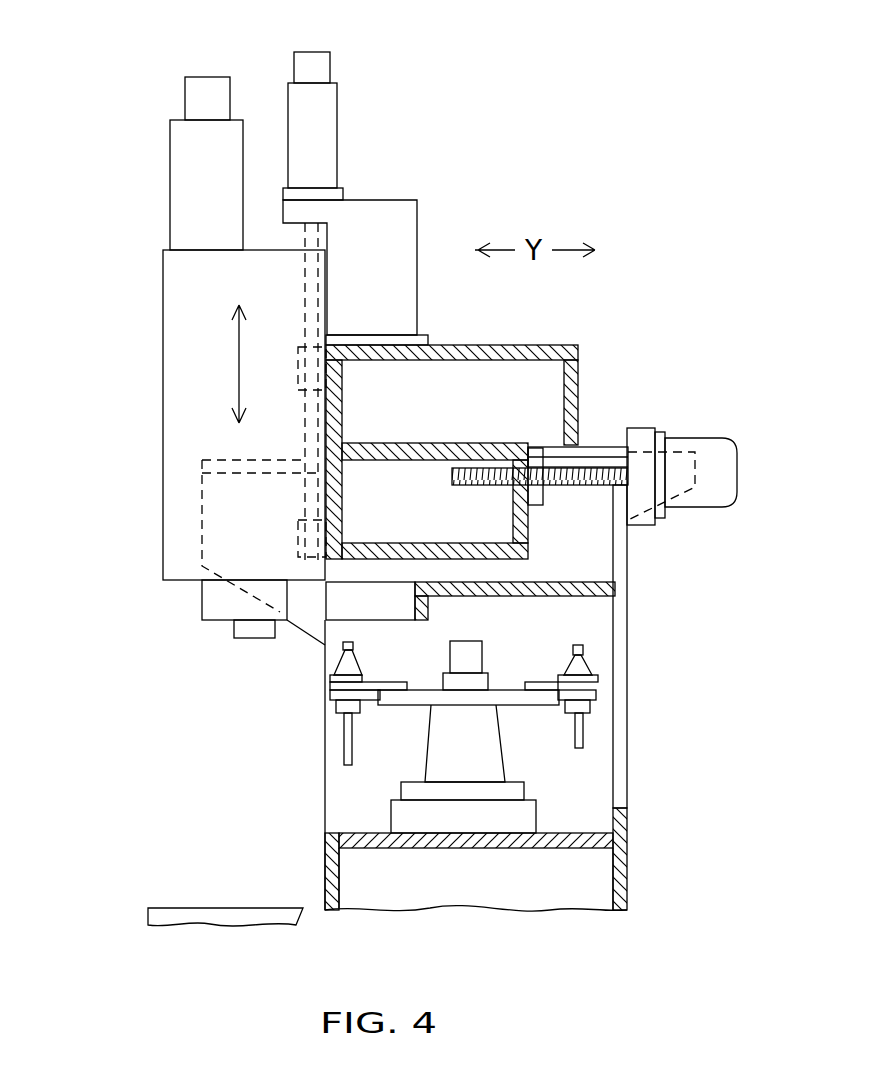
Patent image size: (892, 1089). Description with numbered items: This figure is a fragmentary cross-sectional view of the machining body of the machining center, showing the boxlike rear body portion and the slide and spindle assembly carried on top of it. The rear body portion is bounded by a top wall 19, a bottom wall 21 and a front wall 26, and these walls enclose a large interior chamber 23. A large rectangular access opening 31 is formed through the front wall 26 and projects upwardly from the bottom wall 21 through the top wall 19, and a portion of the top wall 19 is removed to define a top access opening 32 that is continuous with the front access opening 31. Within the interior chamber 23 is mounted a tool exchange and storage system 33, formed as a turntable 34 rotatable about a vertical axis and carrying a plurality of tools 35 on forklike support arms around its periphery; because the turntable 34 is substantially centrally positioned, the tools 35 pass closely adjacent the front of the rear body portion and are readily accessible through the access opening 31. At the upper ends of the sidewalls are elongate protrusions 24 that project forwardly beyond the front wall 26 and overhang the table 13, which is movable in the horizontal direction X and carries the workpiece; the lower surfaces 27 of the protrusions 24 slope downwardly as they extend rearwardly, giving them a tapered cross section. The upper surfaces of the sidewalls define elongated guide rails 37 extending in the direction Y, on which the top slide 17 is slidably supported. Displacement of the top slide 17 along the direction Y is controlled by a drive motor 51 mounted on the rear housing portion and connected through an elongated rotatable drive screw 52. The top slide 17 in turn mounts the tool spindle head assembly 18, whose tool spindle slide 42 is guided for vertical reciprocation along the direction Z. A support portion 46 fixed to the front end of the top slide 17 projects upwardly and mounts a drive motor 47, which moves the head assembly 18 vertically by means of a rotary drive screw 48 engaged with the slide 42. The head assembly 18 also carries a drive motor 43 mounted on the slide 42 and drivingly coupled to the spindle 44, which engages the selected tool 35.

The table 13 is at (177, 918).
The top slide 17 is at (490, 345).
The tool spindle head assembly 18 is at (149, 414).
The top wall 19 is at (595, 585).
The bottom wall 21 is at (527, 848).
The interior chamber 23 is at (568, 770).
The protrusions 24 is at (217, 530).
The front wall 26 is at (323, 858).
The lower surfaces 27 is at (302, 632).
The access opening 31 is at (337, 793).
The top access opening 32 is at (378, 595).
The tool exchange and storage system 33 is at (511, 674).
The turntable 34 is at (425, 697).
The tools 35 is at (347, 720).
The guide rails 37 is at (255, 470).
The tool spindle slide 42 is at (190, 355).
The drive motor 43 is at (190, 163).
The spindle 44 is at (255, 635).
The support portion 46 is at (400, 262).
The drive motor 47 is at (320, 112).
The rotary drive screw 48 is at (308, 240).
The drive motor 51 is at (708, 445).
The drive screw 52 is at (572, 487).